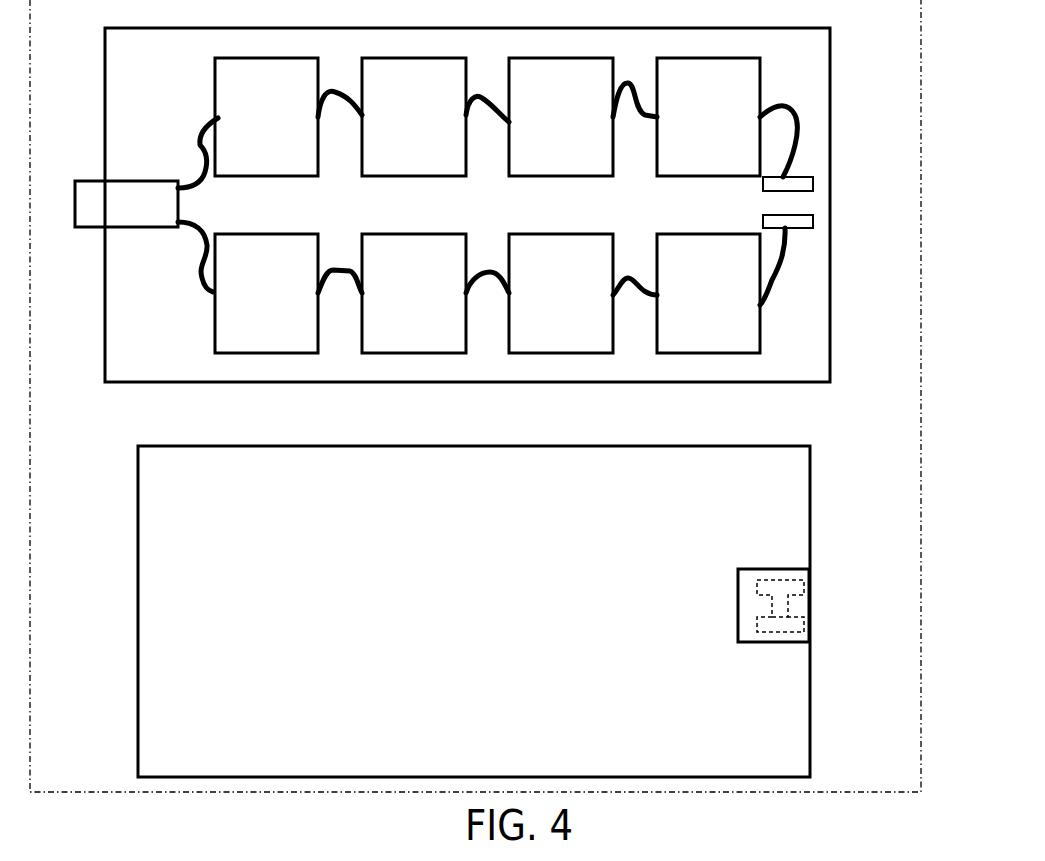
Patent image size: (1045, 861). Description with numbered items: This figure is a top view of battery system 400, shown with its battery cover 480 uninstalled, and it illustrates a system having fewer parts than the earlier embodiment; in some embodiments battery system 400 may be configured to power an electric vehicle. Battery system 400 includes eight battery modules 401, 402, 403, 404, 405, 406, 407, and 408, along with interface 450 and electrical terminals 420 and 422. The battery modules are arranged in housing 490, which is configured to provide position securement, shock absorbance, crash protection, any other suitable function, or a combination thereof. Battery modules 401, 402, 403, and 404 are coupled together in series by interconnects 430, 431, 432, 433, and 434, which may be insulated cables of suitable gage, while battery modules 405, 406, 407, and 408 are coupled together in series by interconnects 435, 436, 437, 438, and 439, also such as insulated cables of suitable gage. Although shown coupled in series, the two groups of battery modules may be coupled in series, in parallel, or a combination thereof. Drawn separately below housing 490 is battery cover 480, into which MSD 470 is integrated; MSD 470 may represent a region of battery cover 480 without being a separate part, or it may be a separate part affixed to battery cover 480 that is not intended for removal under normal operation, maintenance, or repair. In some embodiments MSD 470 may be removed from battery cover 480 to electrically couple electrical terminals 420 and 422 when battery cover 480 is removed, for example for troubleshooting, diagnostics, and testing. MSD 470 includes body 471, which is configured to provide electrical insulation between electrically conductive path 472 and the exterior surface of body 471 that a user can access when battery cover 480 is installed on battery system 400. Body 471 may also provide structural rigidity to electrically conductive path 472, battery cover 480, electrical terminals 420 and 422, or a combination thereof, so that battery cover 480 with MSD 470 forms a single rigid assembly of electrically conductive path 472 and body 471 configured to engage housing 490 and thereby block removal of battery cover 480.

The battery system 400 is at (82, 63).
The housing 490 is at (162, 95).
The interface 450 is at (147, 216).
The battery module 401 is at (286, 132).
The battery module 402 is at (434, 132).
The battery module 403 is at (581, 132).
The battery module 404 is at (728, 132).
The battery module 405 is at (728, 306).
The battery module 406 is at (581, 306).
The battery module 407 is at (434, 306).
The battery module 408 is at (286, 306).
The electrical terminal 420 is at (813, 183).
The electrical terminal 422 is at (813, 221).
The interconnect 430 is at (206, 117).
The interconnect 431 is at (345, 87).
The interconnect 432 is at (481, 95).
The interconnect 433 is at (628, 84).
The interconnect 434 is at (783, 102).
The interconnect 435 is at (782, 287).
The interconnect 436 is at (627, 302).
The interconnect 437 is at (485, 280).
The interconnect 438 is at (342, 275).
The interconnect 439 is at (200, 293).
The battery cover 480 is at (195, 521).
The MSD 470 is at (776, 643).
The body 471 is at (803, 602).
The electrically conductive path 472 is at (793, 627).